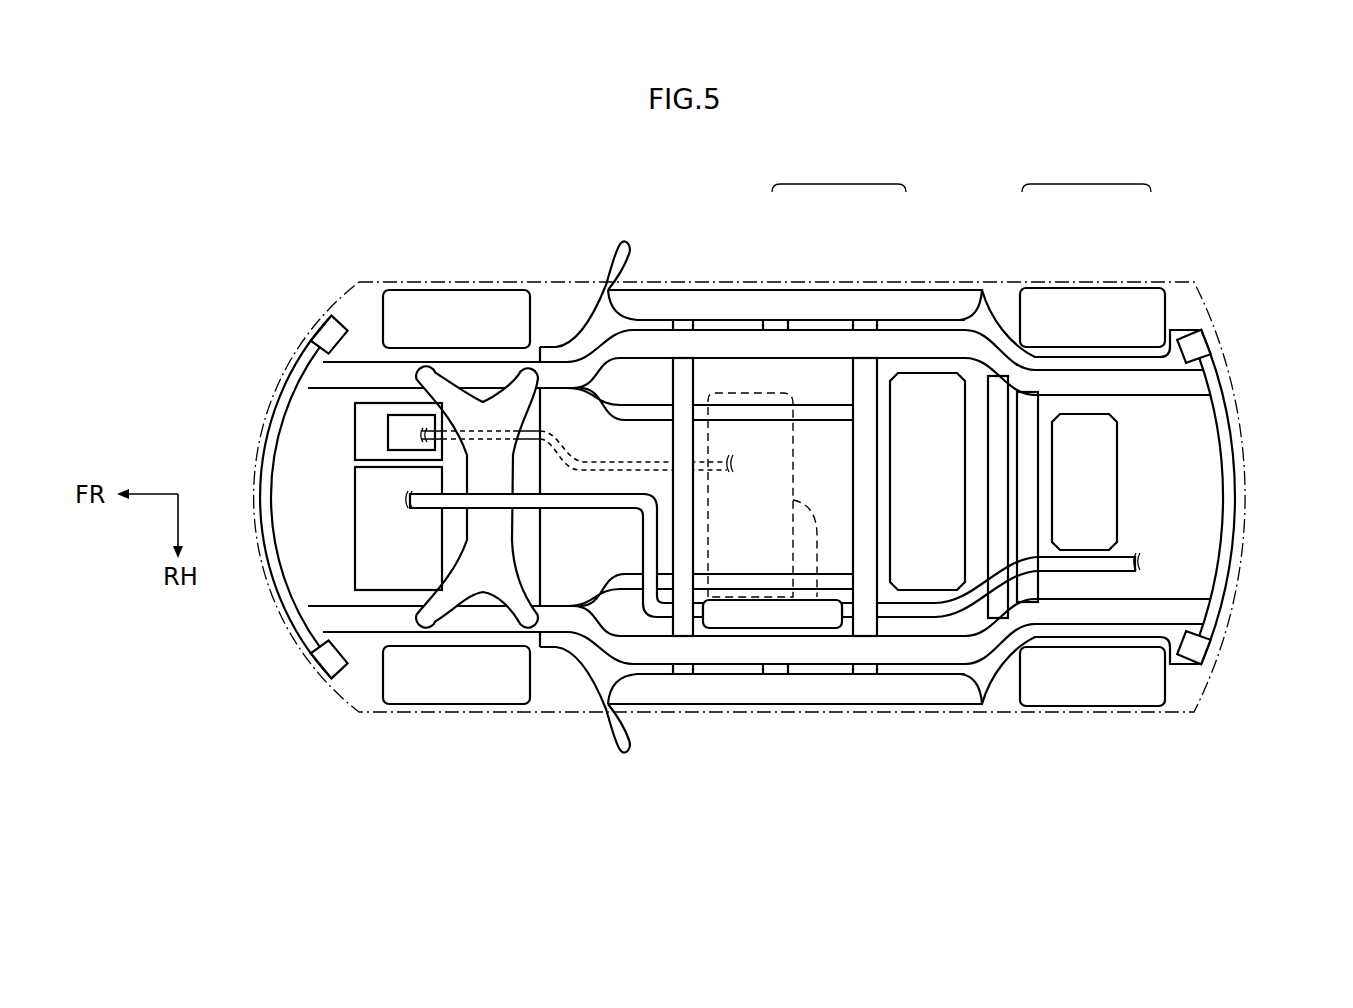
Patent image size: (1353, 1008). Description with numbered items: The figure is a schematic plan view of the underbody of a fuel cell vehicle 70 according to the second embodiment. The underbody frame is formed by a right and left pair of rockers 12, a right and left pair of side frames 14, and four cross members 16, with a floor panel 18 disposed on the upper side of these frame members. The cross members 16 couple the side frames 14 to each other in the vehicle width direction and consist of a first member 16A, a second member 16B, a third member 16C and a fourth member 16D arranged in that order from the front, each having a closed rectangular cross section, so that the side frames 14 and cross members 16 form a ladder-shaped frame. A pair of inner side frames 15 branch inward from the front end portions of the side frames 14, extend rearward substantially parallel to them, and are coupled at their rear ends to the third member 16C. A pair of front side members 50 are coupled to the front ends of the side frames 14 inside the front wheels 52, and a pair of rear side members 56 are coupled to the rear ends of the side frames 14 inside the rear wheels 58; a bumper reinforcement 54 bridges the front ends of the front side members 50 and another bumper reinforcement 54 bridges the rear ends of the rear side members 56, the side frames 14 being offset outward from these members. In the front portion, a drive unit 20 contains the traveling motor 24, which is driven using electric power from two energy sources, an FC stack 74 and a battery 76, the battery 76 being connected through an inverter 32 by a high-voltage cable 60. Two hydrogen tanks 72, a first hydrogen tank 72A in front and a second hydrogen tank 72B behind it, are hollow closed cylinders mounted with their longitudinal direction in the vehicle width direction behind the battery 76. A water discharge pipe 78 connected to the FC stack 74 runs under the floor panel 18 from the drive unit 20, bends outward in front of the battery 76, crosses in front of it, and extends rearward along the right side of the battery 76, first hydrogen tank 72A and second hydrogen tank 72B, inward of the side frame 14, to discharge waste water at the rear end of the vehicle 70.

The rocker 12 is at (885, 300).
The side frame 14 is at (632, 405).
The inner side frame 15 is at (703, 378).
The cross member 16 is at (961, 168).
The first member 16A is at (688, 375).
The second member 16B is at (840, 375).
The third member 16C is at (996, 420).
The fourth member 16D is at (1027, 413).
The floor panel 18 is at (566, 332).
The drive unit 20 is at (320, 445).
The traveling motor 24 is at (368, 430).
The inverter 32 is at (310, 336).
The front side member 50 is at (383, 380).
The front wheel 52 is at (458, 300).
The bumper reinforcement 54 is at (265, 470).
The rear side member 56 is at (1228, 333).
The rear wheel 58 is at (1132, 307).
The high-voltage cable 60 is at (527, 438).
The vehicle 70 is at (342, 755).
The hydrogen tank 72 is at (1108, 364).
The first hydrogen tank 72A is at (950, 378).
The second hydrogen tank 72B is at (1163, 378).
The FC stack 74 is at (370, 548).
The battery 76 is at (813, 628).
The water discharge pipe 78 is at (937, 622).